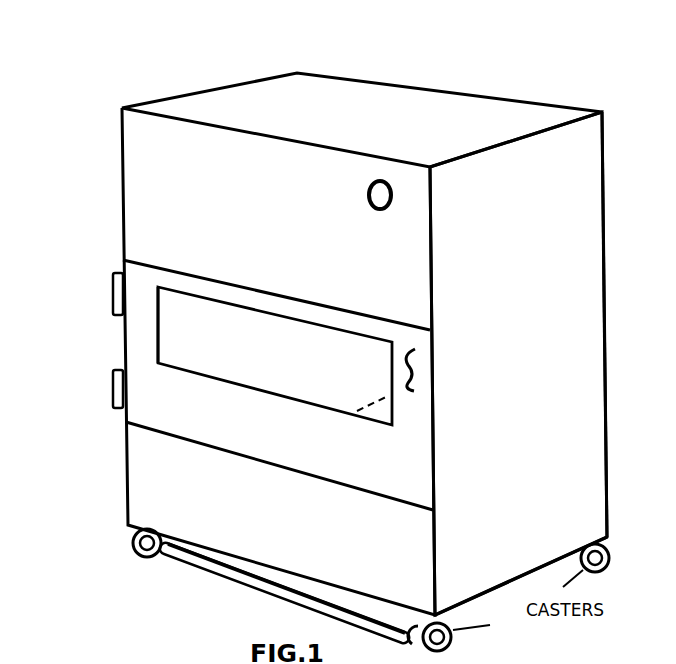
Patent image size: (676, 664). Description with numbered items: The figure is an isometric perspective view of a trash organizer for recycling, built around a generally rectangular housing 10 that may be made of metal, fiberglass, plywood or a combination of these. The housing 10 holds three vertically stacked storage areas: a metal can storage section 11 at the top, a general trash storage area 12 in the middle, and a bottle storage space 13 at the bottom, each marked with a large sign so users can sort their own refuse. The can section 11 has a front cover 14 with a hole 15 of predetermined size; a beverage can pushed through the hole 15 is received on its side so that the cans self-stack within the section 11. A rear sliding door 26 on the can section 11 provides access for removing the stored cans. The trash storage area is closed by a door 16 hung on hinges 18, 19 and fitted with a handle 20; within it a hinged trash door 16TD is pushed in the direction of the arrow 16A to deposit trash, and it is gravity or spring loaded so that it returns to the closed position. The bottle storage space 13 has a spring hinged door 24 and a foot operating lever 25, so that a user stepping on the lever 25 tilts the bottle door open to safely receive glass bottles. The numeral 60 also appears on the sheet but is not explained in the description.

The recycling container 10 is at (362, 96).
The side panel 11 is at (540, 260).
The side wall 12 is at (533, 402).
The bottom panel 13 is at (543, 532).
The front panel 14 is at (140, 222).
The can opening 15 is at (383, 208).
The trash door 16 is at (234, 431).
The door edge 16A is at (394, 389).
The trash door opening 16TD is at (167, 340).
The hinge 18 is at (118, 275).
The hinge 19 is at (118, 370).
The door handle 20 is at (416, 370).
The bottle compartment 24 is at (155, 483).
The support bar 25 is at (223, 578).
The corner edge 26 is at (606, 157).
The sheet numeral 60 is at (115, 654).